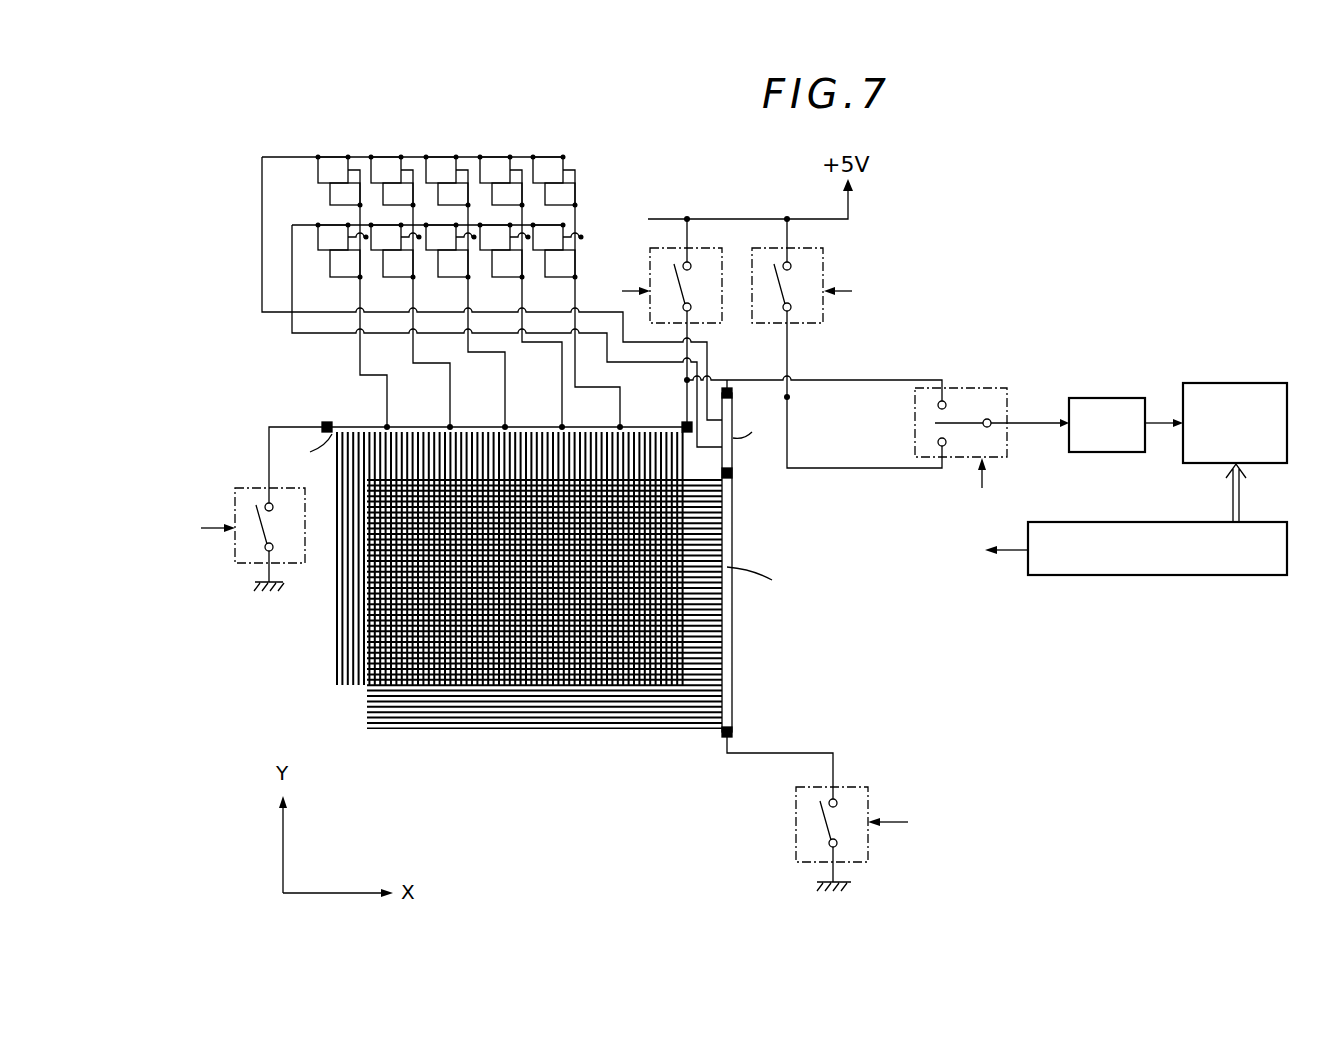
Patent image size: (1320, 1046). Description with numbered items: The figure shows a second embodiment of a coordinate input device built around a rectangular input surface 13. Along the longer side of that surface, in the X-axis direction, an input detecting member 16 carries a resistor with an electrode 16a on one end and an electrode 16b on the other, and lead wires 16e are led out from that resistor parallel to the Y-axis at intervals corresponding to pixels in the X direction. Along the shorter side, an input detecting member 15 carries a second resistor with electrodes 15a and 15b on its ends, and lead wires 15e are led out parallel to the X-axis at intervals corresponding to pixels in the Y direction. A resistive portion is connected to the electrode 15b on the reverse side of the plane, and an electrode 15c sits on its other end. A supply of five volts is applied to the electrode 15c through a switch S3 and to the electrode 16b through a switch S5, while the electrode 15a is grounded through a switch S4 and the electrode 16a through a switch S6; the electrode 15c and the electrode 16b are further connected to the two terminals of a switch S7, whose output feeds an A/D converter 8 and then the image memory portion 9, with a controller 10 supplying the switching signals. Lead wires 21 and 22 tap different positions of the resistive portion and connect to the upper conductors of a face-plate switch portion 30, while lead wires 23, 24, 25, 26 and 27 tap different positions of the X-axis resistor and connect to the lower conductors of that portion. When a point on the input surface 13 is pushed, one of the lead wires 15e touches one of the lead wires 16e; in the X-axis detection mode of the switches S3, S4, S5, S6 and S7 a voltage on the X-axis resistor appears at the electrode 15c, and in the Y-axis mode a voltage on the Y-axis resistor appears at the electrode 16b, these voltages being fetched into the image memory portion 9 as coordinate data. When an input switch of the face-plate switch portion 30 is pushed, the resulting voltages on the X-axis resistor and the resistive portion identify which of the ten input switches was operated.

The face-plate switch portion 30 is at (587, 172).
The lead wire 21 is at (673, 343).
The lead wire 22 is at (613, 362).
The lead wire 23 is at (388, 412).
The lead wire 24 is at (450, 398).
The lead wire 25 is at (505, 392).
The lead wire 26 is at (562, 398).
The lead wire 27 is at (620, 407).
The input surface 13 is at (522, 575).
The input detecting member 16 is at (456, 505).
The electrode 16a is at (326, 421).
The electrode 16b is at (684, 424).
The lead wires 16e is at (337, 636).
The input detecting member 15 is at (685, 569).
The electrode 15a is at (735, 729).
The electrode 15b is at (733, 478).
The electrode 15c is at (728, 387).
The lead wires 15e is at (577, 730).
The A/D converter 8 is at (1098, 397).
The image memory portion 9 is at (1205, 382).
The controller 10 is at (1230, 576).
The switch S3 is at (825, 272).
The switch S4 is at (840, 786).
The switch S5 is at (650, 268).
The switch S6 is at (248, 487).
The switch S7 is at (1000, 387).